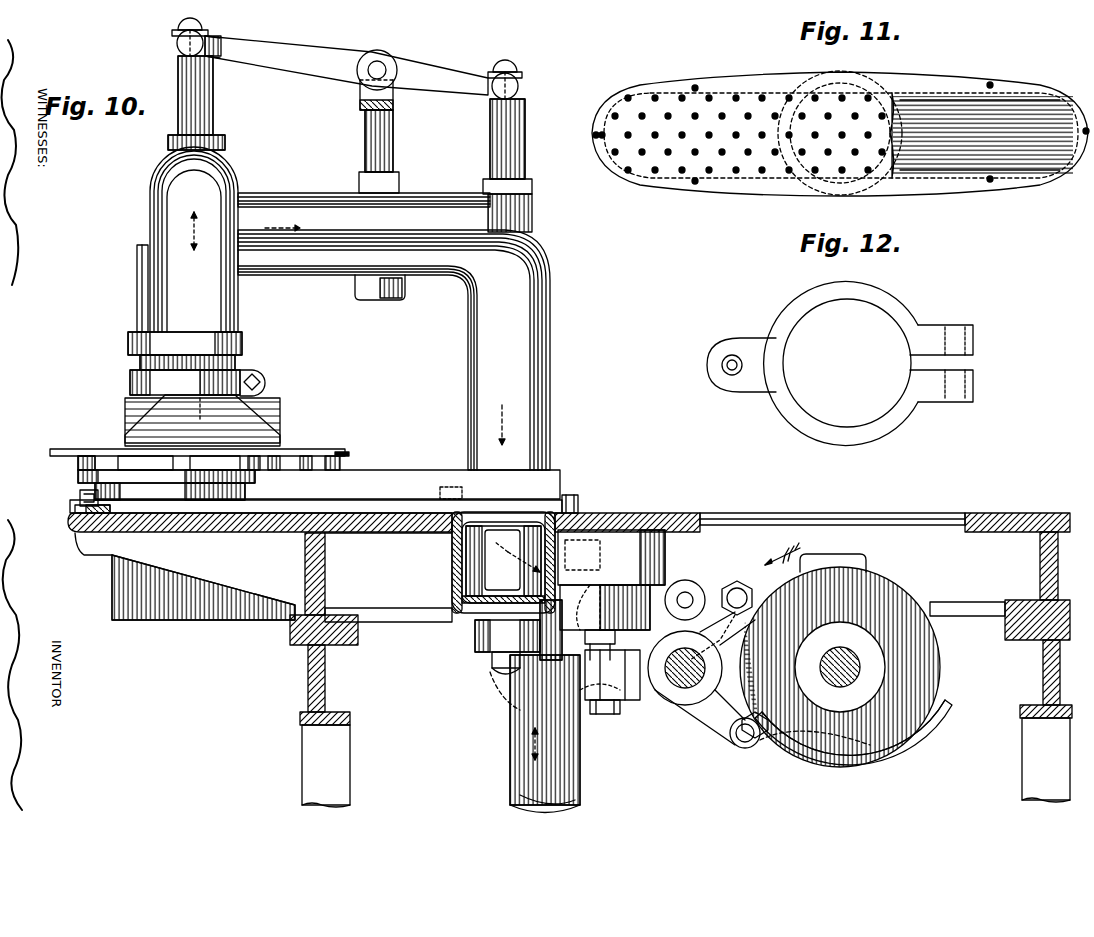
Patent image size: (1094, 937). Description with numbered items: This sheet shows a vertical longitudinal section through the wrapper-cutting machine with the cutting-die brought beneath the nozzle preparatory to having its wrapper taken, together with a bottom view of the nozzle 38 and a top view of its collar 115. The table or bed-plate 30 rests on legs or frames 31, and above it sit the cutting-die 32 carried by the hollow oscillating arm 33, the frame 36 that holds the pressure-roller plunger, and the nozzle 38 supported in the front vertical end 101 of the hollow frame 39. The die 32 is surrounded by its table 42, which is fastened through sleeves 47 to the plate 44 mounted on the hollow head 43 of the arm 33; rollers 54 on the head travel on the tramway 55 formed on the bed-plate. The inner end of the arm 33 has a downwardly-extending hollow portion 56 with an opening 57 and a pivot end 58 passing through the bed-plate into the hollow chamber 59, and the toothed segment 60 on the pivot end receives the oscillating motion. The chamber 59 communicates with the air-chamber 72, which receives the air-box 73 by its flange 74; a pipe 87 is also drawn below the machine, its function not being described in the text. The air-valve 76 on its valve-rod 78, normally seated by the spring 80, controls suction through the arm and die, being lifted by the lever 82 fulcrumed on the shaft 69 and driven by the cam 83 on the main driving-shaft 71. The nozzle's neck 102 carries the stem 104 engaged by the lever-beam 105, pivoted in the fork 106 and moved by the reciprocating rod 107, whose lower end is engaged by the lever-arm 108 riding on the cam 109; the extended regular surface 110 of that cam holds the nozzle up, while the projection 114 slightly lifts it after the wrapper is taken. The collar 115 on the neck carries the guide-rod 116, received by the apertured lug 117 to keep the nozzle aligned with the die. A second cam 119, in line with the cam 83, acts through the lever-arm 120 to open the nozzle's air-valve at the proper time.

In FIG. 10, the table or bed-plate 30 is at (1000, 500).
In FIG. 10, the legs or frames 31 is at (686, 762).
In FIG. 10, the cutting-die 32 is at (286, 452).
In FIG. 10, the oscillating arm 33 is at (316, 491).
In FIG. 10, the frame 36 is at (262, 420).
In FIG. 11, the nozzle 38 is at (972, 98).
In FIG. 10, the hollow frame or arm 39 is at (394, 331).
In FIG. 10, the table 42 is at (348, 441).
In FIG. 10, the head 43 is at (170, 492).
In FIG. 10, the plate 44 is at (78, 478).
In FIG. 10, the sleeves 47 is at (78, 460).
In FIG. 10, the rollers 54 is at (80, 497).
In FIG. 10, the tramway 55 is at (75, 514).
In FIG. 10, the downwardly-extending hollow portion 56 is at (466, 548).
In FIG. 10, the opening 57 is at (512, 560).
In FIG. 10, the pivot end 58 is at (500, 650).
In FIG. 10, the hollow chamber 59 is at (452, 580).
In FIG. 10, the toothed segment 60 is at (475, 640).
In FIG. 10, the shaft 69 is at (680, 700).
In FIG. 10, the main driving-shaft 71 is at (842, 648).
In FIG. 10, the air-chamber 72 is at (665, 560).
In FIG. 10, the air-box 73 is at (640, 620).
In FIG. 10, the flange 74 is at (706, 562).
In FIG. 10, the air-valve 76 is at (592, 570).
In FIG. 10, the valve-rod 78 is at (605, 714).
In FIG. 10, the springs 80 is at (615, 636).
In FIG. 10, the lever 82 is at (645, 690).
In FIG. 10, the cam 83 is at (905, 595).
In FIG. 10, the pipe 87 is at (510, 752).
In FIG. 10, the front vertical end 101 is at (194, 239).
In FIG. 10, the neck 102 is at (236, 362).
In FIG. 10, the stem 104 is at (210, 112).
In FIG. 10, the lever-beam 105 is at (346, 73).
In FIG. 10, the fork 106 is at (392, 147).
In FIG. 10, the rod 107 is at (522, 154).
In FIG. 10, the lever-arm 108 is at (721, 620).
In FIG. 10, the cam 109 is at (838, 774).
In FIG. 10, the extended regular surface 110 is at (930, 738).
In FIG. 10, the projection 114 is at (856, 549).
In FIG. 10, the collar 115 is at (131, 374).
In FIG. 12, the collar 115 is at (840, 363).
In FIG. 10, the guide-rod 116 is at (137, 300).
In FIG. 10, the apertured lug 117 is at (128, 350).
In FIG. 10, the cam 119 is at (778, 564).
In FIG. 10, the lever-arm 120 is at (730, 730).